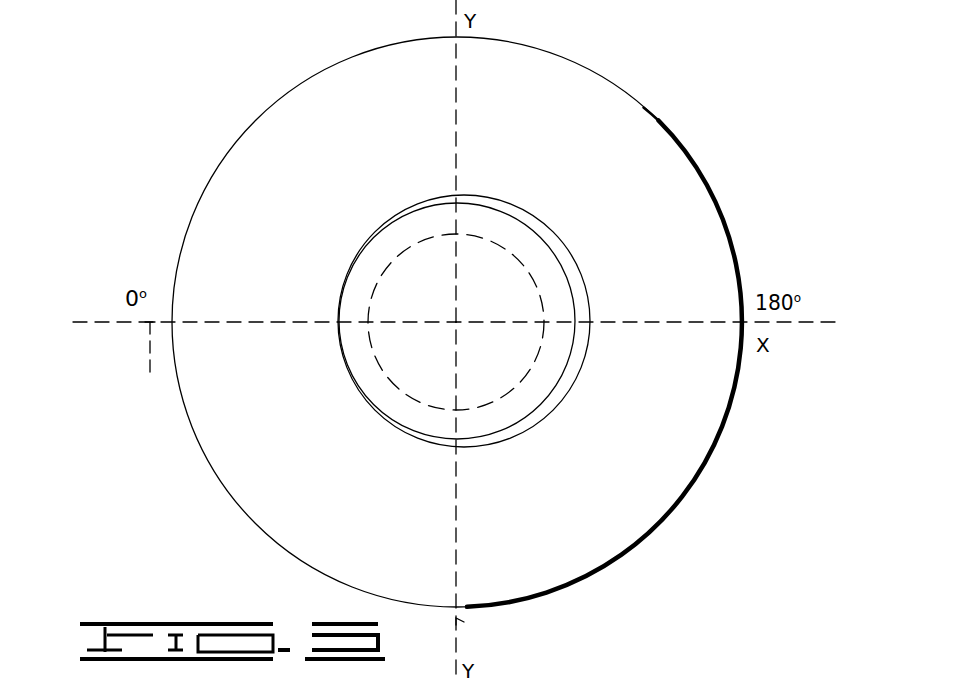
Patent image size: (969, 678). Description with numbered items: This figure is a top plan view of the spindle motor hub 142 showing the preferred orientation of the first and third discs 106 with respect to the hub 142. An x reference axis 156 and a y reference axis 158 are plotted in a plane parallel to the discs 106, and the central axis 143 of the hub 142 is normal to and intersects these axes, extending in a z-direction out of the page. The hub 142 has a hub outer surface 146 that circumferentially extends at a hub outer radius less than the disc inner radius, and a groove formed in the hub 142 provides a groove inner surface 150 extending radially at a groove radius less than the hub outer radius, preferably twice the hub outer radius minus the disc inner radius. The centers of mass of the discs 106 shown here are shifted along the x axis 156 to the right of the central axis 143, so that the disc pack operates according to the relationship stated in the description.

The disc 106 is at (310, 112).
The spindle motor hub 142 is at (500, 228).
The central axis 143 is at (473, 332).
The hub outer surface 146 is at (373, 230).
The groove inner surface 150 is at (391, 383).
The x reference axis 156 is at (138, 389).
The y reference axis 158 is at (464, 622).